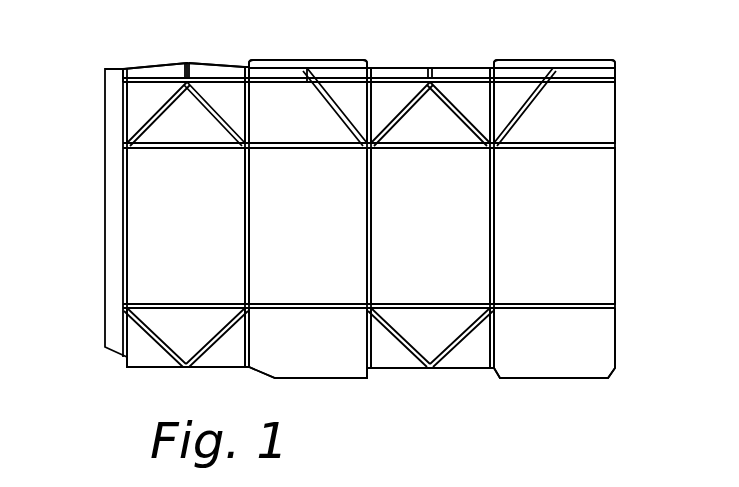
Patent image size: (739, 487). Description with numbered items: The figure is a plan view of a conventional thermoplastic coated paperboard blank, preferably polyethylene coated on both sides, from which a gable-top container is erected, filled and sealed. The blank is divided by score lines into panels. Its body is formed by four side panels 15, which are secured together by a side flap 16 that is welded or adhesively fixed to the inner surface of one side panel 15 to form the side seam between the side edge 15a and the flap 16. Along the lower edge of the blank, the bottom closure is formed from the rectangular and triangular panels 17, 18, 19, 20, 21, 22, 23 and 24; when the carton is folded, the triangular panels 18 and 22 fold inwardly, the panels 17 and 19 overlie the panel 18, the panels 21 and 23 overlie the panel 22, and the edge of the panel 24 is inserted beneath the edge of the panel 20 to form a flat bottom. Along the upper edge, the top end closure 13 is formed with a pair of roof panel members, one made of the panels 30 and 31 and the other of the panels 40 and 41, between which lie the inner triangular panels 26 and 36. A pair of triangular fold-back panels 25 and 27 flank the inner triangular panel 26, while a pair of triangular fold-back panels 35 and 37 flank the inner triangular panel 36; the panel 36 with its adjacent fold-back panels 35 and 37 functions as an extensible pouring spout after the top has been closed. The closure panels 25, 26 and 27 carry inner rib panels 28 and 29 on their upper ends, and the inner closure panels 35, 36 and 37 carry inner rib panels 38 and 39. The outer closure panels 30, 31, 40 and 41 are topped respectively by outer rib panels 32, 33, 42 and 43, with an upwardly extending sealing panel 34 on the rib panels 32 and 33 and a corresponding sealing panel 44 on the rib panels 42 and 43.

The top end closure 13 is at (109, 58).
The side panels 15 is at (195, 227).
The side edge 15a is at (612, 183).
The side flap 16 is at (113, 185).
The bottom closure panel 17 is at (153, 350).
The triangular panel 18 is at (183, 322).
The bottom closure panel 19 is at (228, 350).
The bottom closure panel 20 is at (335, 358).
The bottom closure panel 21 is at (400, 350).
The triangular panel 22 is at (437, 325).
The bottom closure panel 23 is at (470, 350).
The bottom closure panel 24 is at (574, 365).
The triangular fold-back panel 25 is at (133, 100).
The inner triangular panel 26 is at (183, 128).
The triangular fold-back panel 27 is at (226, 128).
The inner rib panel 28 is at (162, 73).
The inner rib panel 29 is at (210, 73).
The roof panel 30 is at (302, 120).
The roof panel 31 is at (350, 120).
The outer rib panel 32 is at (266, 76).
The outer rib panel 33 is at (345, 74).
The sealing panel 34 is at (310, 62).
The triangular fold-back panel 35 is at (386, 100).
The inner triangular panel 36 is at (418, 120).
The triangular fold-back panel 37 is at (470, 120).
The inner rib panel 38 is at (421, 73).
The inner rib panel 39 is at (460, 73).
The roof panel 40 is at (510, 90).
The roof panel 41 is at (605, 118).
The outer rib panel 42 is at (538, 72).
The outer rib panel 43 is at (608, 76).
The sealing panel 44 is at (610, 58).